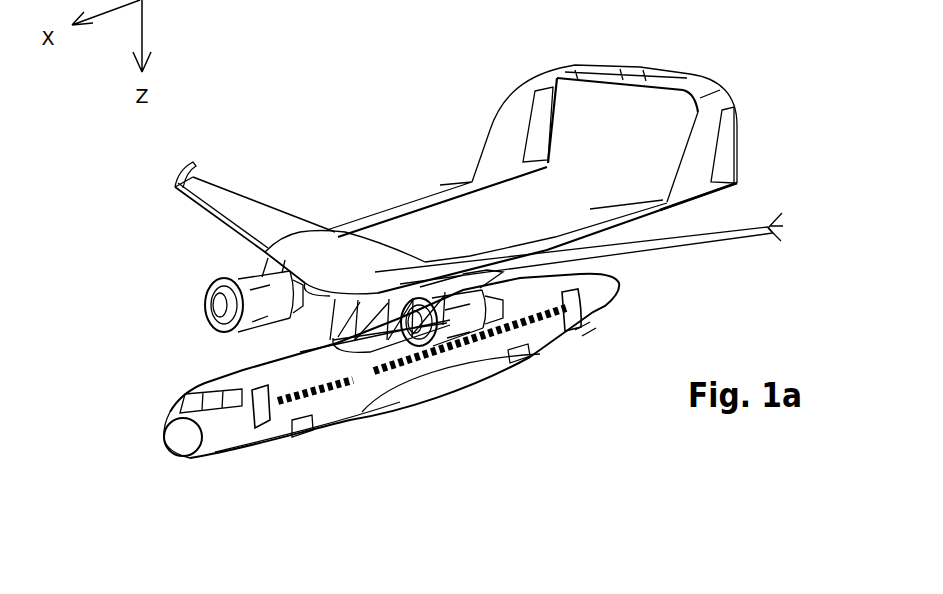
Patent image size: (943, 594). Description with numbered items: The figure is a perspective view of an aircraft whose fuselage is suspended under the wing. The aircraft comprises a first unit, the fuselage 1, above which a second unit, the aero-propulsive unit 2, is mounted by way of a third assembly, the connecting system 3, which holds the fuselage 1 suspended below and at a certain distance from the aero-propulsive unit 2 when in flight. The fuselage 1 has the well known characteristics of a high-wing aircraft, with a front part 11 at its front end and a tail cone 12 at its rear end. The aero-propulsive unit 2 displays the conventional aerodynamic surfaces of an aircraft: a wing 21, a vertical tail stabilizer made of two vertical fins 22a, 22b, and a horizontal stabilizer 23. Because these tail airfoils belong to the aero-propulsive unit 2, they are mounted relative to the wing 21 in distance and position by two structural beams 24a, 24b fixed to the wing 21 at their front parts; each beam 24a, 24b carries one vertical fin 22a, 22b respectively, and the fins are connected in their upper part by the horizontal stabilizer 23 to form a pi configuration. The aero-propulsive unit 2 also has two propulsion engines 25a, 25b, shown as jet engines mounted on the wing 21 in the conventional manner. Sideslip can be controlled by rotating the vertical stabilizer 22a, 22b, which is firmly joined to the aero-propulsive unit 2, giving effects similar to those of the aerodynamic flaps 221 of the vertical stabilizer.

The fuselage 1 is at (391, 390).
The front part 11 is at (212, 440).
The tail cone 12 is at (538, 338).
The aero-propulsive unit 2 is at (363, 173).
The wing 21 is at (253, 218).
The vertical fin 22a is at (513, 125).
The vertical fin 22b is at (683, 178).
The aerodynamic flaps 221 is at (533, 136).
The horizontal stabilizer 23 is at (593, 78).
The structural beam 24a is at (422, 197).
The structural beam 24b is at (555, 240).
The propulsion engine 25a is at (236, 286).
The propulsion engine 25b is at (465, 333).
The connecting system 3 is at (330, 313).